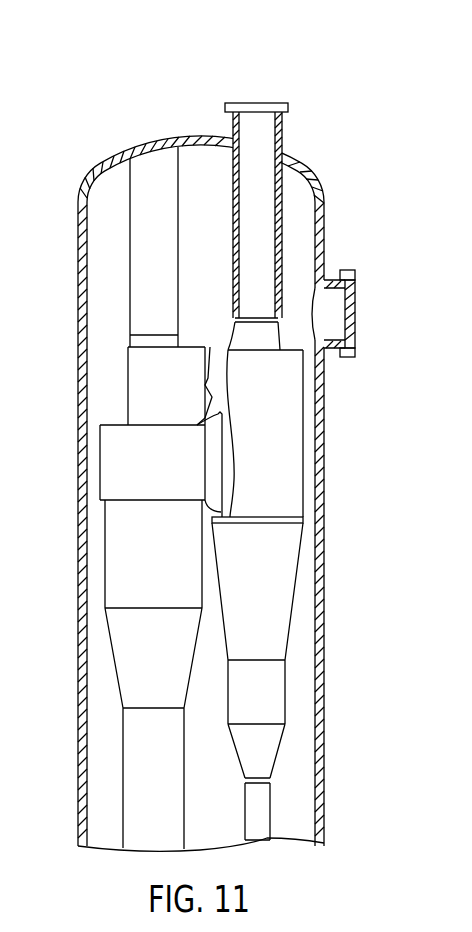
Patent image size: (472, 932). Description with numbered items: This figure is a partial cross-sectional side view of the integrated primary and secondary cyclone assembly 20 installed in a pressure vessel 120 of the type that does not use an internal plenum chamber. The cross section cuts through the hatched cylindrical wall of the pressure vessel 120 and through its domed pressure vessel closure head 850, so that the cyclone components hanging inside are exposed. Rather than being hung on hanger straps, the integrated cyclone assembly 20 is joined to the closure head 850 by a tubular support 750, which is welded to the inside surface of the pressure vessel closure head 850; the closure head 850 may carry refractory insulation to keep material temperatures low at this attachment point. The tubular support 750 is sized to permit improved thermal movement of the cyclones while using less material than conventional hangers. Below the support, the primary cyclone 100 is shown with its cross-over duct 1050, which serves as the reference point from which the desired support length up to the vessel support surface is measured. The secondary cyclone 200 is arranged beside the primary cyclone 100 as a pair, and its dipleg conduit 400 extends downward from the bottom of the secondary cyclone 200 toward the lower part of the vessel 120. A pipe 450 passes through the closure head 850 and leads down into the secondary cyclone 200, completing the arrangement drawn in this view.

The integrated cyclone assembly 20 is at (139, 107).
The pressure vessel 120 is at (78, 552).
The pressure vessel closure head 850 is at (306, 176).
The inlet pipe 450 is at (233, 190).
The tubular support 750 is at (128, 210).
The cross-over duct 1050 is at (196, 357).
The primary cyclone 100 is at (110, 440).
The secondary cyclone 200 is at (289, 454).
The dipleg conduit 400 is at (262, 807).